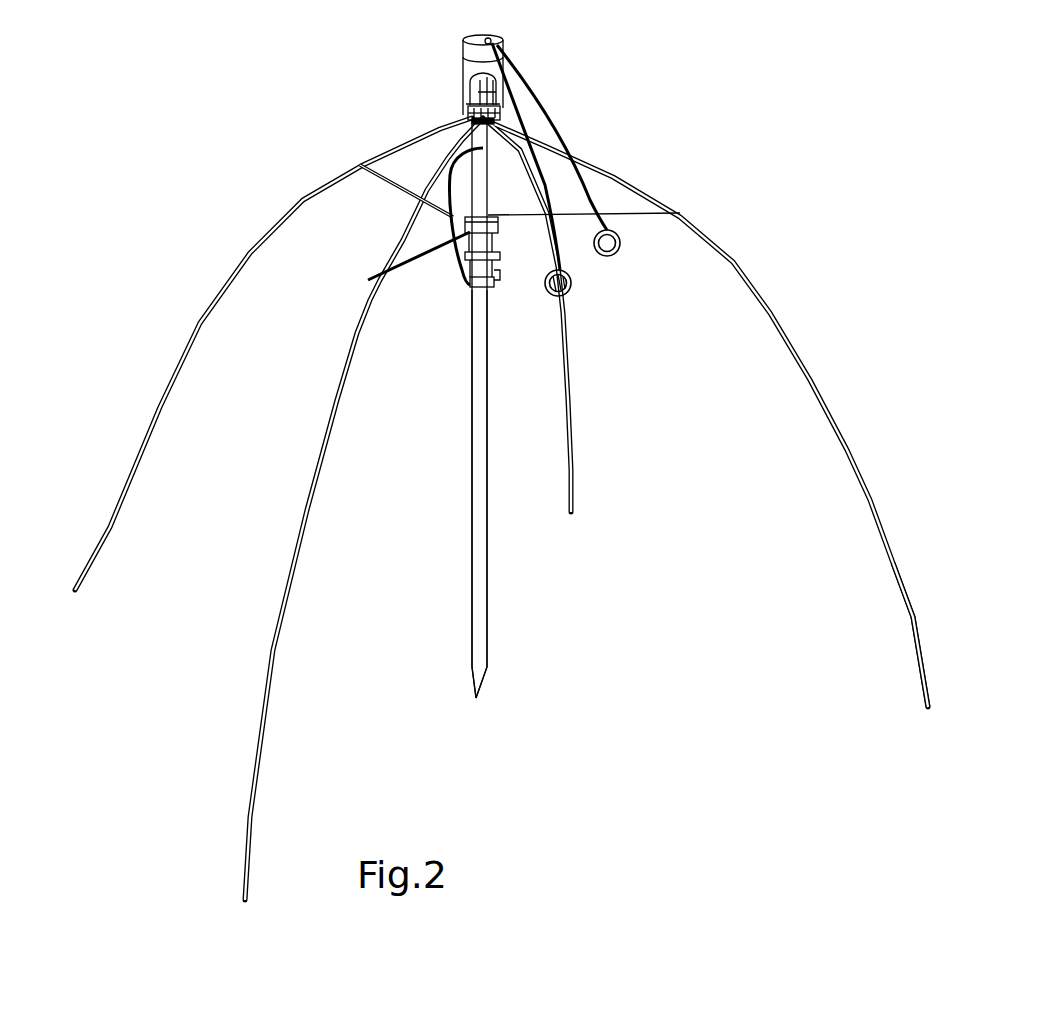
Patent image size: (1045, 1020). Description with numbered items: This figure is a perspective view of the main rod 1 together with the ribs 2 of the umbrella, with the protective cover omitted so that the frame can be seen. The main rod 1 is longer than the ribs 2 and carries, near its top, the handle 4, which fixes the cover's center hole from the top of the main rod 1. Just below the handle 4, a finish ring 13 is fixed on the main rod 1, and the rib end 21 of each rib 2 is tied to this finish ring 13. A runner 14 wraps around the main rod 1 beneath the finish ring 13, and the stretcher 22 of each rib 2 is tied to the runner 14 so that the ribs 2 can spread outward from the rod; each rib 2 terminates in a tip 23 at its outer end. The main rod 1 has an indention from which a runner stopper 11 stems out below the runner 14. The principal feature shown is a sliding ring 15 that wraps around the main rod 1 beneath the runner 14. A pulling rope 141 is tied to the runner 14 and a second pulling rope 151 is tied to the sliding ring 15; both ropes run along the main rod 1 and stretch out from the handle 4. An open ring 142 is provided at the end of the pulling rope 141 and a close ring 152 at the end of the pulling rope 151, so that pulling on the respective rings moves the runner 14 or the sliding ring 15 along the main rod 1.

The main rod 1 is at (490, 600).
The runner stopper 11 is at (503, 265).
The finish ring 13 is at (495, 112).
The runner 14 is at (465, 247).
The pulling rope 141 is at (450, 198).
The open ring 142 is at (620, 240).
The sliding ring 15 is at (470, 293).
The pulling rope 151 is at (440, 158).
The close ring 152 is at (572, 283).
The rib 2 is at (806, 350).
The rib end 21 is at (557, 142).
The stretcher 22 is at (620, 207).
The tip 23 is at (927, 670).
The handle 4 is at (455, 62).